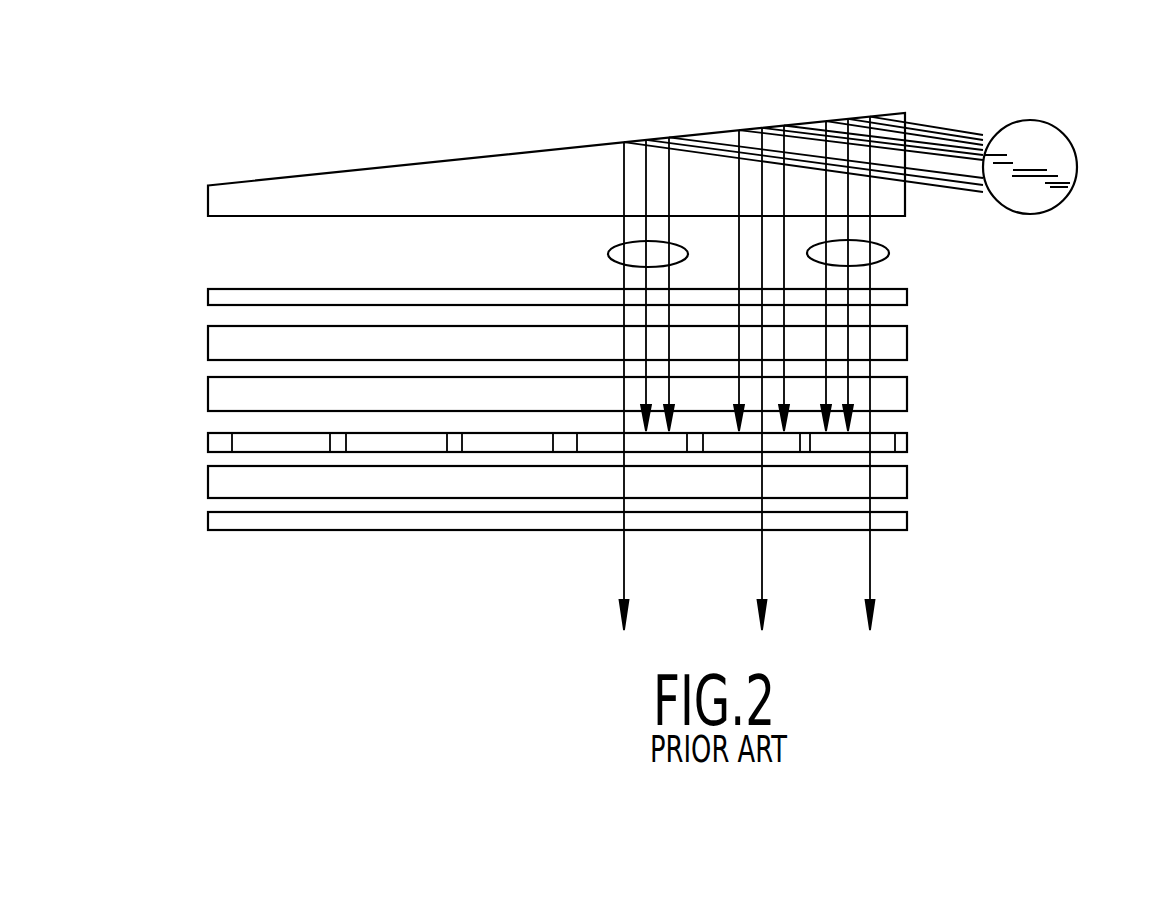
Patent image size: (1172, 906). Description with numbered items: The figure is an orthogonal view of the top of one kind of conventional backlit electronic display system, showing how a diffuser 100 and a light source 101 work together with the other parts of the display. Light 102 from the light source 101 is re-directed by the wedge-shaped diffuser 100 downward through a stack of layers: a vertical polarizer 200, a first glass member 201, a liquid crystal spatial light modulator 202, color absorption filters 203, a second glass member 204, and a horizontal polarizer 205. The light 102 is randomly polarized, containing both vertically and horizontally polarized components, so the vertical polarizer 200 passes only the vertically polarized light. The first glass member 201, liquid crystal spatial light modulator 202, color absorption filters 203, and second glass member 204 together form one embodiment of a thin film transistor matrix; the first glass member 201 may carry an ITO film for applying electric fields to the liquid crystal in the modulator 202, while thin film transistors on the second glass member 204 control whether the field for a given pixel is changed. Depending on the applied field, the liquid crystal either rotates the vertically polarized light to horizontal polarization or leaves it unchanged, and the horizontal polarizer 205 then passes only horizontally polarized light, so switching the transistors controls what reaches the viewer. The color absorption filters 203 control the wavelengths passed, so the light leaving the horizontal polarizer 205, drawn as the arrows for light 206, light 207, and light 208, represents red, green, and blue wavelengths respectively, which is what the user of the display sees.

The diffuser 100 is at (551, 148).
The light source 101 is at (1068, 140).
The light 102 is at (958, 128).
The vertical polarizer 200 is at (907, 297).
The first glass member 201 is at (907, 343).
The liquid crystal spatial light modulator 202 is at (907, 394).
The color absorption filters 203 is at (907, 442).
The second glass member 204 is at (907, 482).
The horizontal polarizer 205 is at (907, 521).
The light 206 is at (871, 568).
The light 207 is at (762, 567).
The light 208 is at (624, 563).